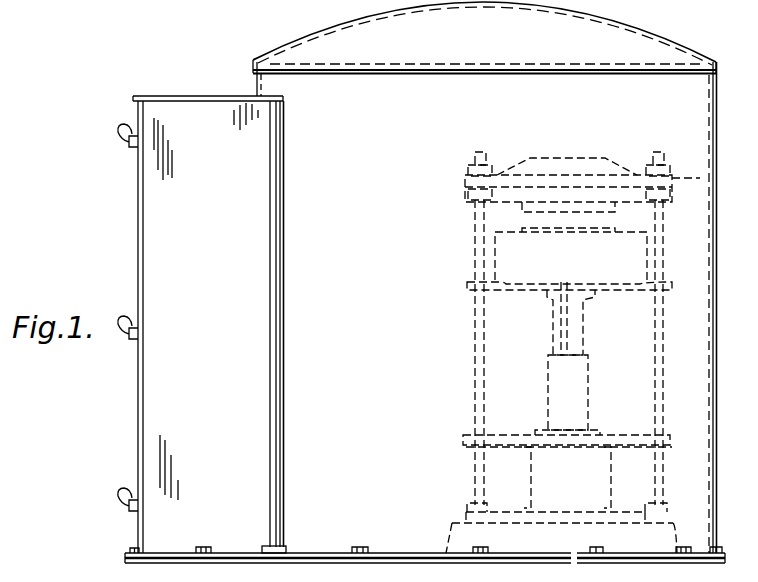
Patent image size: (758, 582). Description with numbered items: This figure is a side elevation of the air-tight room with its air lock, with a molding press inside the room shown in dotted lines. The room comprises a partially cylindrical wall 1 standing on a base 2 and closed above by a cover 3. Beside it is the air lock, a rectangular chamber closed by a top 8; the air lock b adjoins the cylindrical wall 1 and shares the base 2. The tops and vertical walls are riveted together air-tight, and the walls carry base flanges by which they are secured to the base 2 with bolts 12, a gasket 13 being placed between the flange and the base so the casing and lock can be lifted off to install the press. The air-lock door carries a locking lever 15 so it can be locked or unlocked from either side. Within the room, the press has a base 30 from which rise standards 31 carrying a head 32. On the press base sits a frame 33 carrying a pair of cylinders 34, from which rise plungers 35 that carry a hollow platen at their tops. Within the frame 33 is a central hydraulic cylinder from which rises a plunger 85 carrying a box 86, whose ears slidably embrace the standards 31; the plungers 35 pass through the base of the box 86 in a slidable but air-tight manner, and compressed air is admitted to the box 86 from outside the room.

The partially cylindrical wall 1 is at (485, 306).
The base 2 is at (346, 564).
The cover 3 is at (484, 37).
The top 8 is at (210, 99).
The side chamber b is at (197, 327).
The bolts 12 is at (362, 551).
The gasket 13 is at (726, 566).
The locking lever 15 is at (128, 492).
The base of the mold press 30 is at (561, 532).
The standards 31 is at (659, 374).
The head 32 is at (628, 152).
The frame 33 is at (569, 477).
The cylinders 34 is at (585, 400).
The plungers 35 is at (560, 333).
The plunger 85 is at (585, 334).
The box 86 is at (571, 254).